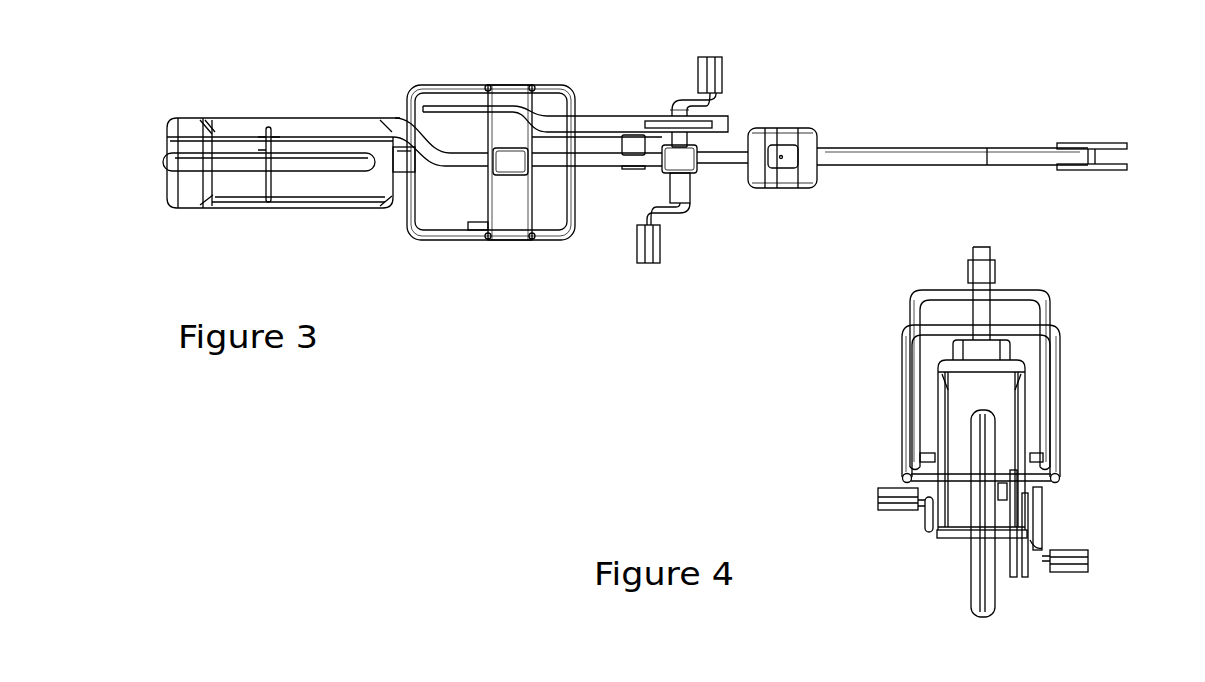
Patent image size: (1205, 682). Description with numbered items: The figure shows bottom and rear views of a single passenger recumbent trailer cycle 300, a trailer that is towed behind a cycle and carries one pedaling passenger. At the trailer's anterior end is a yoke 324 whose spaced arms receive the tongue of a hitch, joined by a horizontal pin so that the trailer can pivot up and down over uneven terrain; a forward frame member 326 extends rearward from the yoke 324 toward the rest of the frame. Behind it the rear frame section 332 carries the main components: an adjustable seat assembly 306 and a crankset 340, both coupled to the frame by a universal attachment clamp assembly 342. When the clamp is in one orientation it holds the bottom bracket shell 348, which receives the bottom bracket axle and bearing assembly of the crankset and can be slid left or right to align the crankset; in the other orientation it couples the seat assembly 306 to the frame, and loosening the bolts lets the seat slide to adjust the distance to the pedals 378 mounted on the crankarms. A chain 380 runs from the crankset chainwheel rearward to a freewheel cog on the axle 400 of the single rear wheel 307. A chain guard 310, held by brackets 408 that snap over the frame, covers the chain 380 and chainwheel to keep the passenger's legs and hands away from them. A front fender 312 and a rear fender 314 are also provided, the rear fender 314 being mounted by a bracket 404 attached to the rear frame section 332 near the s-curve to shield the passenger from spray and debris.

In FIG. 3, the single passenger recumbent trailer cycle 300 is at (116, 89).
In FIG. 4, the single passenger recumbent trailer cycle 300 is at (1070, 262).
In FIG. 3, the adjustable seat assembly 306 is at (415, 240).
In FIG. 4, the adjustable seat assembly 306 is at (1058, 395).
In FIG. 3, the single rear wheel 307 is at (165, 156).
In FIG. 4, the single rear wheel 307 is at (977, 597).
In FIG. 3, the chain guard 310 is at (596, 116).
In FIG. 3, the front fender 312 is at (806, 186).
In FIG. 4, the front fender 312 is at (1000, 352).
In FIG. 3, the rear fender 314 is at (222, 118).
In FIG. 4, the rear fender 314 is at (965, 405).
In FIG. 3, the yoke 324 is at (1105, 143).
In FIG. 3, the shaft 326 is at (900, 148).
In FIG. 4, the shaft 326 is at (980, 312).
In FIG. 3, the rear frame section 332 is at (410, 138).
In FIG. 3, the crankset 340 is at (682, 100).
In FIG. 4, the crankset 340 is at (1035, 565).
In FIG. 3, the universal attachment clamp assembly 342 is at (510, 167).
In FIG. 3, the bottom bracket shell 348 is at (685, 210).
In FIG. 3, the pedals 378 is at (722, 68).
In FIG. 4, the pedals 378 is at (900, 507).
In FIG. 3, the chain 380 is at (460, 125).
In FIG. 3, the axle 400 is at (268, 155).
In FIG. 3, the bracket 404 is at (402, 172).
In FIG. 3, the brackets 408 is at (633, 155).